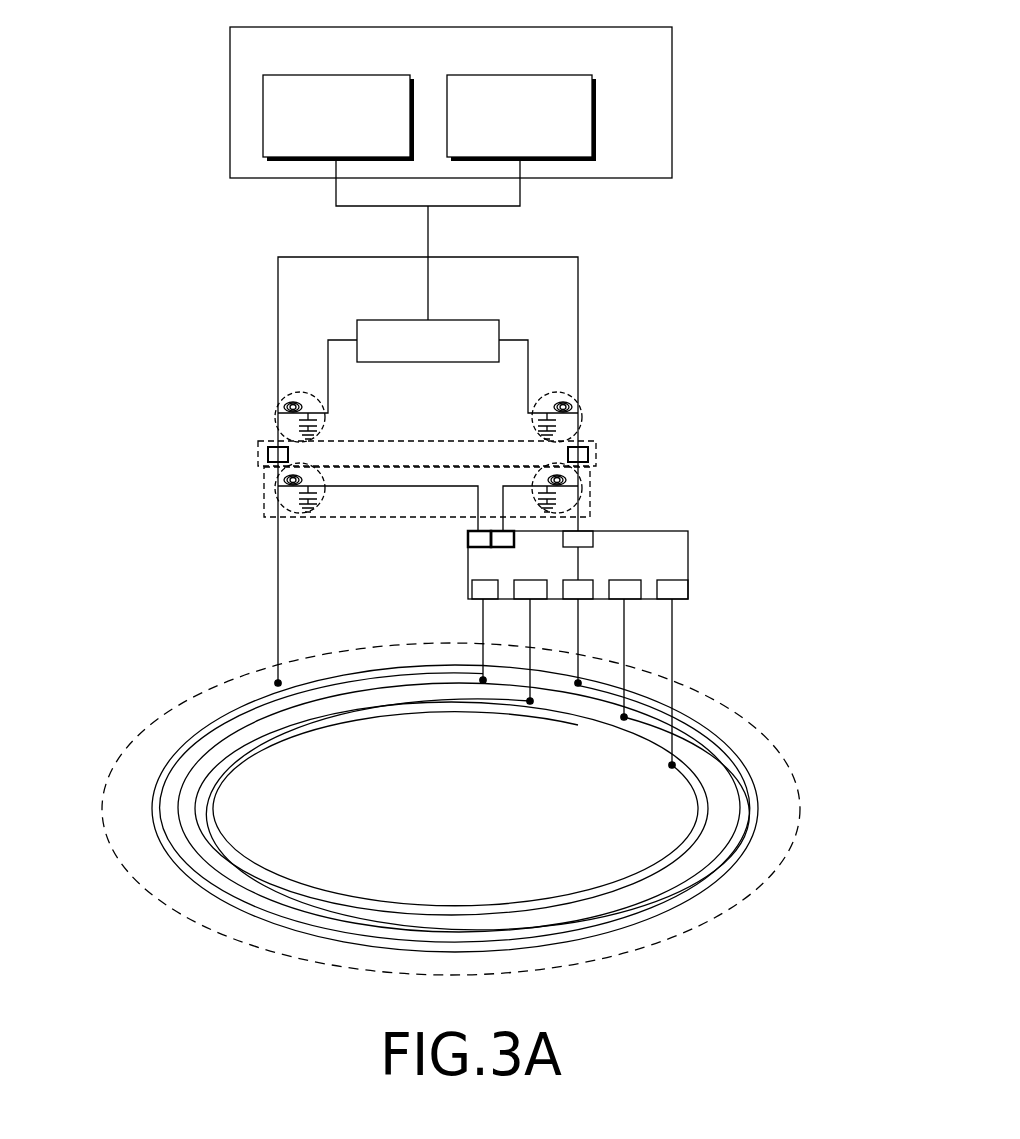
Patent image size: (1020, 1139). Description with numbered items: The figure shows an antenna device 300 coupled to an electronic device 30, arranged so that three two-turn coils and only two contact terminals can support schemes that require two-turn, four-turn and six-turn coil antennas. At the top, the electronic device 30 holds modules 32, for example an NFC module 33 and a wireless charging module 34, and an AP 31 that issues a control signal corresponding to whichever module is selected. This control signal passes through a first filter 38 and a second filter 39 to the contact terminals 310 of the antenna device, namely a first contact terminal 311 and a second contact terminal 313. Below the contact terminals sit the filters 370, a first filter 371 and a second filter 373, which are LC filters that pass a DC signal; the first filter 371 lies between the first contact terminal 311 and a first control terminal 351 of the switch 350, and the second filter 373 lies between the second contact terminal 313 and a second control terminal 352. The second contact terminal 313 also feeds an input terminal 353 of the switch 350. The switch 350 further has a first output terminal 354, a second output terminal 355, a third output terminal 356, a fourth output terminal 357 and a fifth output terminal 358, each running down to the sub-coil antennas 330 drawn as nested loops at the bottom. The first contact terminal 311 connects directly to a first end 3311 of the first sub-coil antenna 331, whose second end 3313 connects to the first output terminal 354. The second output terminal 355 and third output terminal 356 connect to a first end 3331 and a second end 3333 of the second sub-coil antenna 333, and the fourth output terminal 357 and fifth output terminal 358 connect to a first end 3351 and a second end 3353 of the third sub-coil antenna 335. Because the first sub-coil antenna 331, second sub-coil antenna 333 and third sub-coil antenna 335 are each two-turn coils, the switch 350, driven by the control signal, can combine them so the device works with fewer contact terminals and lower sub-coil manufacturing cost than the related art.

The electronic device 30 is at (184, 352).
The AP 31 is at (450, 320).
The modules 32 is at (450, 27).
The NFC module 33 is at (337, 75).
The wireless charging module 34 is at (522, 75).
The first filter 38 is at (305, 394).
The second filter 39 is at (553, 394).
The antenna device 300 is at (175, 589).
The contact terminals 310 is at (430, 441).
The first contact terminal 311 is at (270, 447).
The second contact terminal 313 is at (586, 447).
The sub-coil antennas 330 is at (800, 808).
The first sub-coil antenna 331 is at (160, 848).
The second sub-coil antenna 333 is at (212, 870).
The third sub-coil antenna 335 is at (270, 885).
The switch 350 is at (688, 534).
The first control terminal 351 is at (468, 535).
The second control terminal 352 is at (500, 548).
The input terminal 353 is at (593, 540).
The first output terminal 354 is at (578, 599).
The second output terminal 355 is at (625, 581).
The third output terminal 356 is at (472, 590).
The fourth output terminal 357 is at (688, 590).
The fifth output terminal 358 is at (530, 599).
The filters 370 is at (264, 496).
The first filter 371 is at (285, 480).
The second filter 373 is at (570, 480).
The first end of the first sub-coil antenna 3311 is at (278, 683).
The second end of the first sub-coil antenna 3313 is at (578, 683).
The first end of the second sub-coil antenna 3331 is at (624, 717).
The second end of the second sub-coil antenna 3333 is at (483, 680).
The first end of the third sub-coil antenna 3351 is at (672, 765).
The second end of the third sub-coil antenna 3353 is at (530, 701).